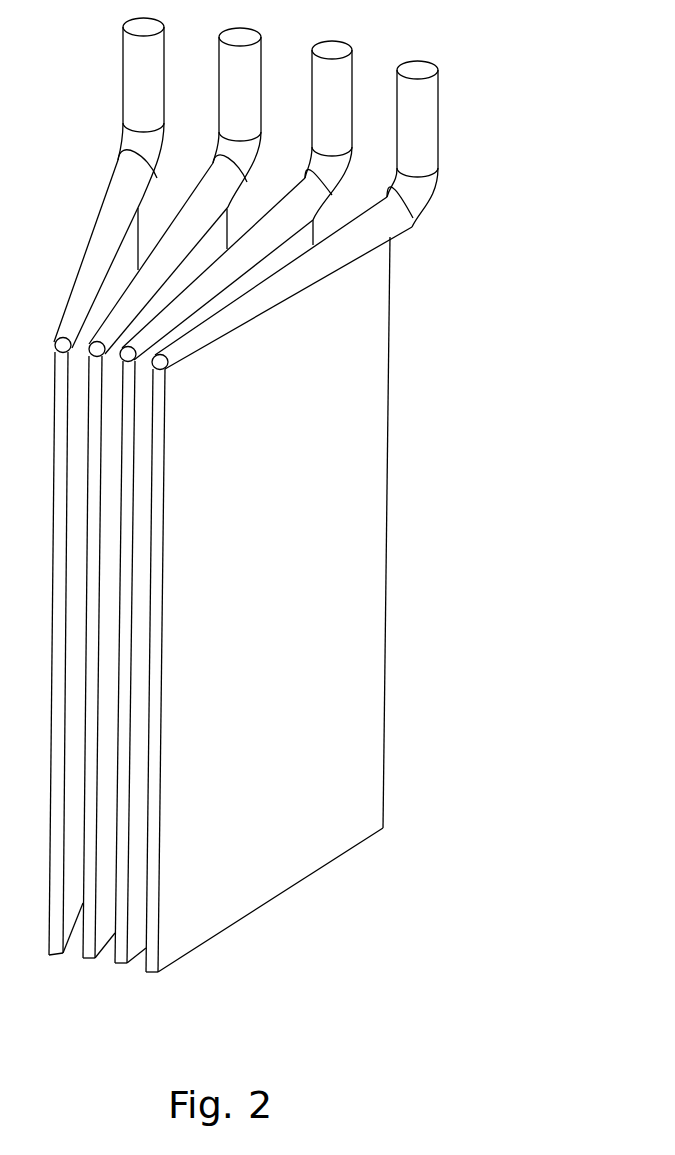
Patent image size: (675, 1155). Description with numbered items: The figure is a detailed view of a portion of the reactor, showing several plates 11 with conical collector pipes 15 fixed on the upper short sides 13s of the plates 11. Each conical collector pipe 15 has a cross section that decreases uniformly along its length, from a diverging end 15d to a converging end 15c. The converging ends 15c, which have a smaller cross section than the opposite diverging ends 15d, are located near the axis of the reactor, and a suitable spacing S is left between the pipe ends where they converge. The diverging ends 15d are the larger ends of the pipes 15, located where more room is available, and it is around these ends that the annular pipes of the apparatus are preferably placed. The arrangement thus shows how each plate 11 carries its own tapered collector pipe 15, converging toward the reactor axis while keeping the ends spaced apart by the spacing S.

The plate 11 is at (358, 542).
The upper short side of plate 13s is at (287, 302).
The conical collector pipe 15 is at (222, 322).
The converging end 15c is at (172, 377).
The diverging end 15d is at (425, 240).
The spacing S is at (83, 360).